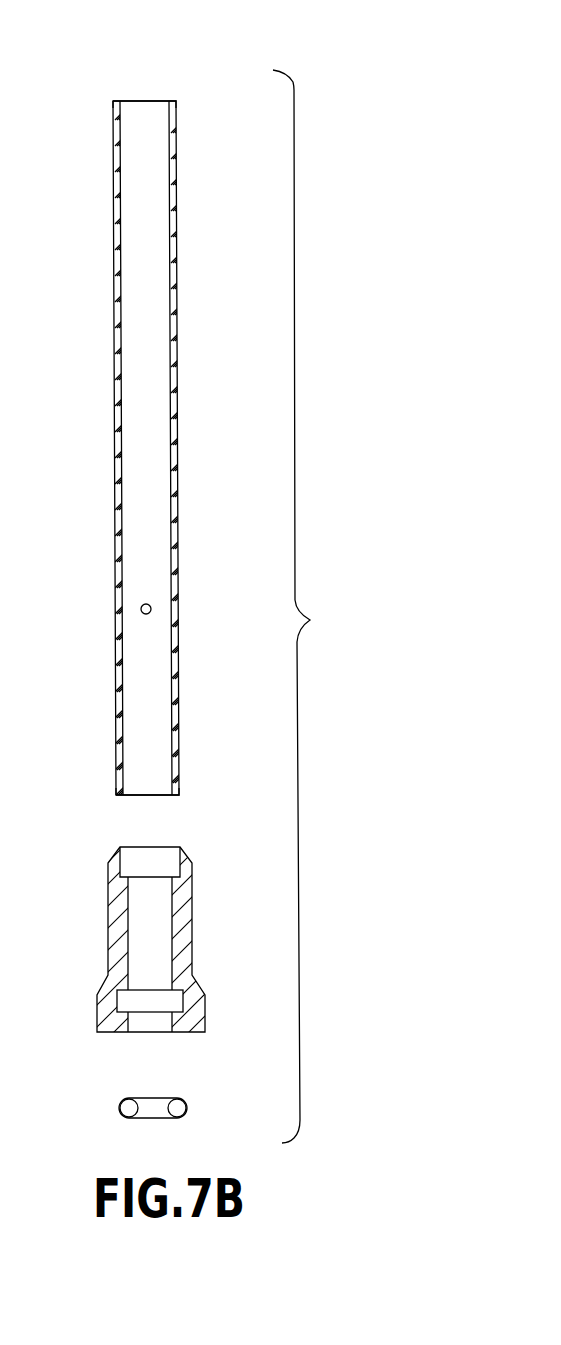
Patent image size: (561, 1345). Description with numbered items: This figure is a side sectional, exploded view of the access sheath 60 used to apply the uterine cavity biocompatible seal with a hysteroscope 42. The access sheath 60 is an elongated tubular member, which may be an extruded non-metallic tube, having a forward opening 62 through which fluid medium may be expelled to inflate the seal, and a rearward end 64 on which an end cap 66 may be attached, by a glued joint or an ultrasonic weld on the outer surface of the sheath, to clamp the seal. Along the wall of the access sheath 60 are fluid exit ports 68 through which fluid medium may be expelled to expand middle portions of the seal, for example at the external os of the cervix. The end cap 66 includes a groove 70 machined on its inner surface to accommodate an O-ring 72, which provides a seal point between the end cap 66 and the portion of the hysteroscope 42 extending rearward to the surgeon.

The hysteroscope 42 is at (213, 65).
The access sheath 60 is at (180, 402).
The forward opening 62 is at (143, 101).
The rearward end 64 is at (136, 796).
The end cap 66 is at (200, 972).
The fluid exit ports 68 is at (152, 603).
The groove 70 is at (150, 1004).
The O-ring 72 is at (190, 1105).